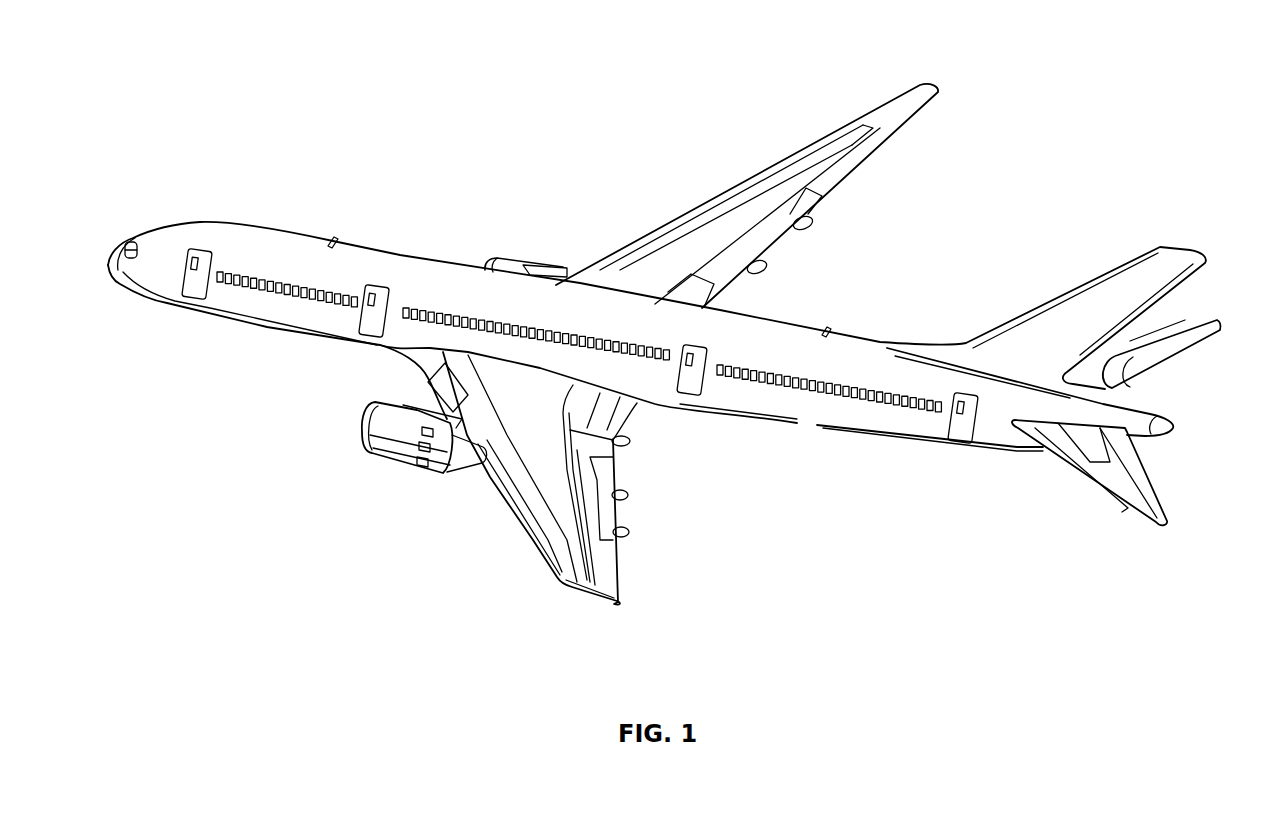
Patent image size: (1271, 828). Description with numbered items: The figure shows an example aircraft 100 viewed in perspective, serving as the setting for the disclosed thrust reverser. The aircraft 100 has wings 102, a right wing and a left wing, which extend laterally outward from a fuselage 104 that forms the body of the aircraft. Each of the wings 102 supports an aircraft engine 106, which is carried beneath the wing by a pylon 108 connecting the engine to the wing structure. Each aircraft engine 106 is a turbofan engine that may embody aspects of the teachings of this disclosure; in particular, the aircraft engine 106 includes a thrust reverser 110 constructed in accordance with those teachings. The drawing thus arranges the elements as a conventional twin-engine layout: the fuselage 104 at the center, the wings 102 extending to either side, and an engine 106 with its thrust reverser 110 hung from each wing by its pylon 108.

The aircraft 100 is at (299, 87).
The wings 102 is at (757, 178).
The fuselage 104 is at (793, 330).
The aircraft engine 106 is at (510, 263).
The pylon 108 is at (549, 268).
The thrust reverser 110 is at (526, 240).